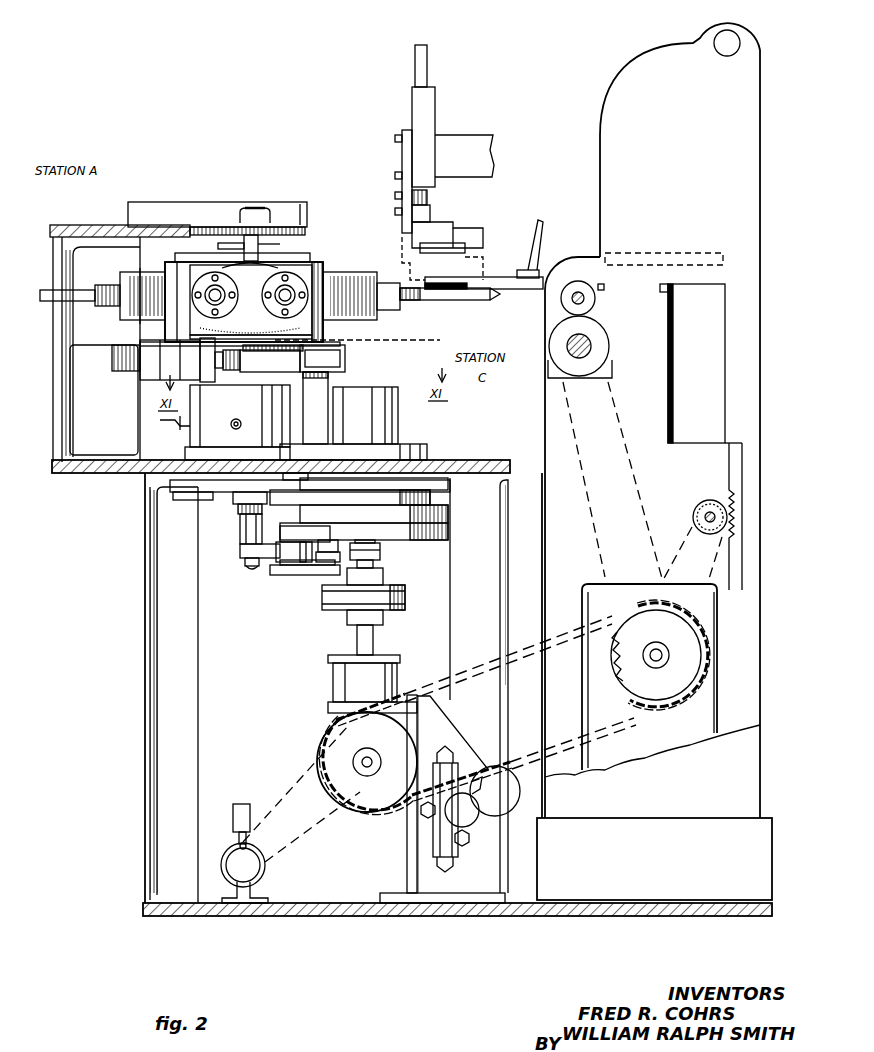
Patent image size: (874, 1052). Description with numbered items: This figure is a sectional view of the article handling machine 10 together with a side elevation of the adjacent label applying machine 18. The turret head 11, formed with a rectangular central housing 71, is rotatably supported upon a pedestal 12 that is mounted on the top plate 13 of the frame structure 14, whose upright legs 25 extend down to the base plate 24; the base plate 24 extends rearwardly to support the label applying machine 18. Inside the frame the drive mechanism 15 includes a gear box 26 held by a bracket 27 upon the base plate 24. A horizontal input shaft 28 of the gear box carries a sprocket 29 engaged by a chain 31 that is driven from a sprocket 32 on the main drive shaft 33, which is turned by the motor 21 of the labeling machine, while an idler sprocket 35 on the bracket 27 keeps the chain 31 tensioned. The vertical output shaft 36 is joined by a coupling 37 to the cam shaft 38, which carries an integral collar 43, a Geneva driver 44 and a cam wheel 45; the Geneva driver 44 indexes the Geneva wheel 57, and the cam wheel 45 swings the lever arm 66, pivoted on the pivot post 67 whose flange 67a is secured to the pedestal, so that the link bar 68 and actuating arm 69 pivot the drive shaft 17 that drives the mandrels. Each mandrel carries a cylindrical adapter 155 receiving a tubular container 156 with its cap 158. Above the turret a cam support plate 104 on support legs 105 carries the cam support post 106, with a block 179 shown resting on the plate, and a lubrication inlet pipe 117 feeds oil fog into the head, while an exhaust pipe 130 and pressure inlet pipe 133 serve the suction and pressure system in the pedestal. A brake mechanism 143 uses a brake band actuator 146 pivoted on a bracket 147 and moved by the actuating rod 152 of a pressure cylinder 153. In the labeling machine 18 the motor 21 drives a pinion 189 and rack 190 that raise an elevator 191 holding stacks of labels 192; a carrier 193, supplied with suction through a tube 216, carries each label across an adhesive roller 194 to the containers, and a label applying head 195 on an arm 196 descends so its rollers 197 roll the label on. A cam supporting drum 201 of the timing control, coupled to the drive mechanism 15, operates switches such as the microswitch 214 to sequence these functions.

The article handling machine 10 is at (168, 176).
The turret head 11 is at (347, 243).
The pedestal 12 is at (408, 415).
The top plate 13 is at (491, 461).
The frame structure 14 is at (125, 586).
The drive mechanism 15 is at (374, 816).
The drive shaft 17 is at (255, 573).
The label applying machine 18 is at (582, 122).
The motor 21 is at (690, 710).
The base plate 24 is at (378, 916).
The upright legs 25 is at (505, 534).
The gear box 26 is at (390, 683).
The bracket 27 is at (407, 878).
The input shaft 28 is at (372, 753).
The sprocket 29 is at (338, 752).
The chain 31 is at (318, 744).
The sprocket 32 is at (690, 658).
The main drive shaft 33 is at (652, 656).
The idler sprocket 35 is at (507, 797).
The output shaft 36 is at (378, 636).
The coupling 37 is at (398, 590).
The cam shaft 38 is at (380, 566).
The collar 43 is at (383, 483).
The Geneva driver 44 is at (428, 497).
The cam wheel 45 is at (450, 526).
The Geneva wheel 57 is at (178, 492).
The lever arm 66 is at (334, 558).
The pivot post 67 is at (298, 558).
The flange 67a is at (310, 488).
The link bar 68 is at (288, 575).
The drive shaft actuating arm 69 is at (258, 553).
The central housing 71 is at (310, 324).
The cam support plate 104 is at (90, 226).
The support legs 105 is at (62, 325).
The cam support post 106 is at (340, 250).
The lubrication inlet pipe 117 is at (218, 245).
The exhaust pipe 130 is at (160, 422).
The pressure inlet pipe 133 is at (232, 427).
The brake mechanism 143 is at (355, 357).
The brake band actuator 146 is at (344, 350).
The bracket 147 is at (326, 392).
The actuating rod 152 is at (262, 373).
The pressure cylinder 153 is at (130, 360).
The cylindrical adapter 155 is at (50, 292).
The tubular containers 156 is at (442, 300).
The cap 158 is at (495, 292).
The block 179 is at (229, 205).
The pinion 189 is at (700, 505).
The rack 190 is at (729, 470).
The elevator 191 is at (736, 444).
The stacks of labels 192 is at (685, 416).
The carrier 193 is at (500, 277).
The roller 194 is at (590, 300).
The label applying head 195 is at (412, 150).
The arm 196 is at (472, 225).
The rollers 197 is at (425, 253).
The cam supporting drum 201 is at (262, 880).
The microswitch 214 is at (248, 818).
The tube 216 is at (542, 240).